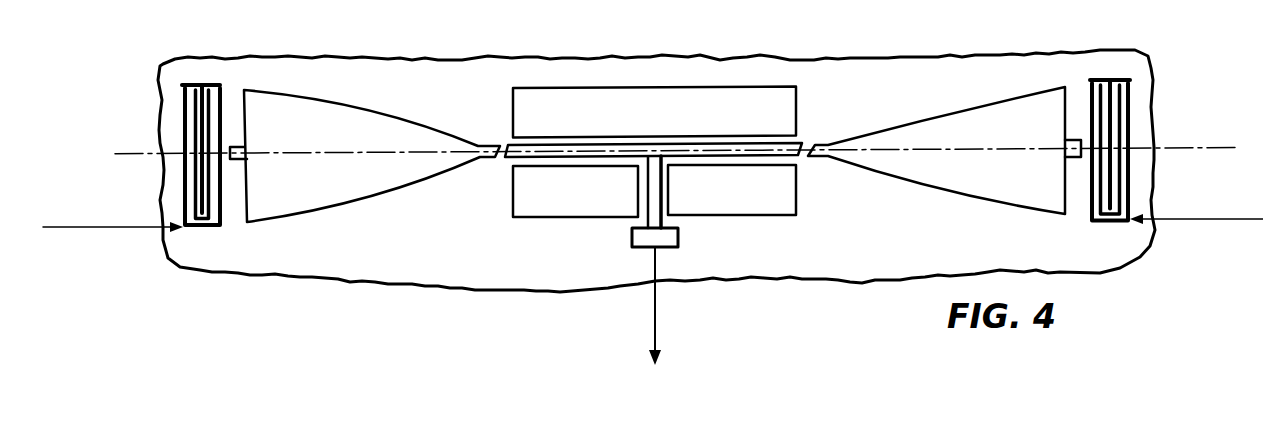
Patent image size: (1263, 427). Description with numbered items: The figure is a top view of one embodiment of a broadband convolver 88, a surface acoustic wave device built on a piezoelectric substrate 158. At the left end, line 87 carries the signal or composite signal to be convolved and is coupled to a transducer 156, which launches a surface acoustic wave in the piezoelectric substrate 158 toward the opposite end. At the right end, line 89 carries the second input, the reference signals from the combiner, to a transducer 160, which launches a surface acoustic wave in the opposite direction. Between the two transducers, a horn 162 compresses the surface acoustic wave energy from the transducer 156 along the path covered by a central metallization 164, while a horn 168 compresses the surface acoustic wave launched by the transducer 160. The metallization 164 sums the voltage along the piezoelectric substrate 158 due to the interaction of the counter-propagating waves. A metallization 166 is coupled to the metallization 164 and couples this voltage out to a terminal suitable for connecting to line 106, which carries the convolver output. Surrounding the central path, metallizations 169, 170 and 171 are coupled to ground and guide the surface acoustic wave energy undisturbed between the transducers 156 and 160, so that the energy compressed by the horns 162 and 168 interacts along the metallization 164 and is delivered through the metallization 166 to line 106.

The broadband convolver 88 is at (706, 50).
The line 87 is at (88, 225).
The line 89 is at (1222, 218).
The line 106 is at (657, 330).
The transducer 156 is at (195, 83).
The piezoelectric substrate 158 is at (512, 56).
The transducer 160 is at (1113, 78).
The horn 162 is at (382, 113).
The metallization 164 is at (745, 159).
The metallization 166 is at (663, 224).
The horn 168 is at (943, 108).
The metallization 169 is at (690, 87).
The metallization 170 is at (573, 219).
The metallization 171 is at (797, 203).